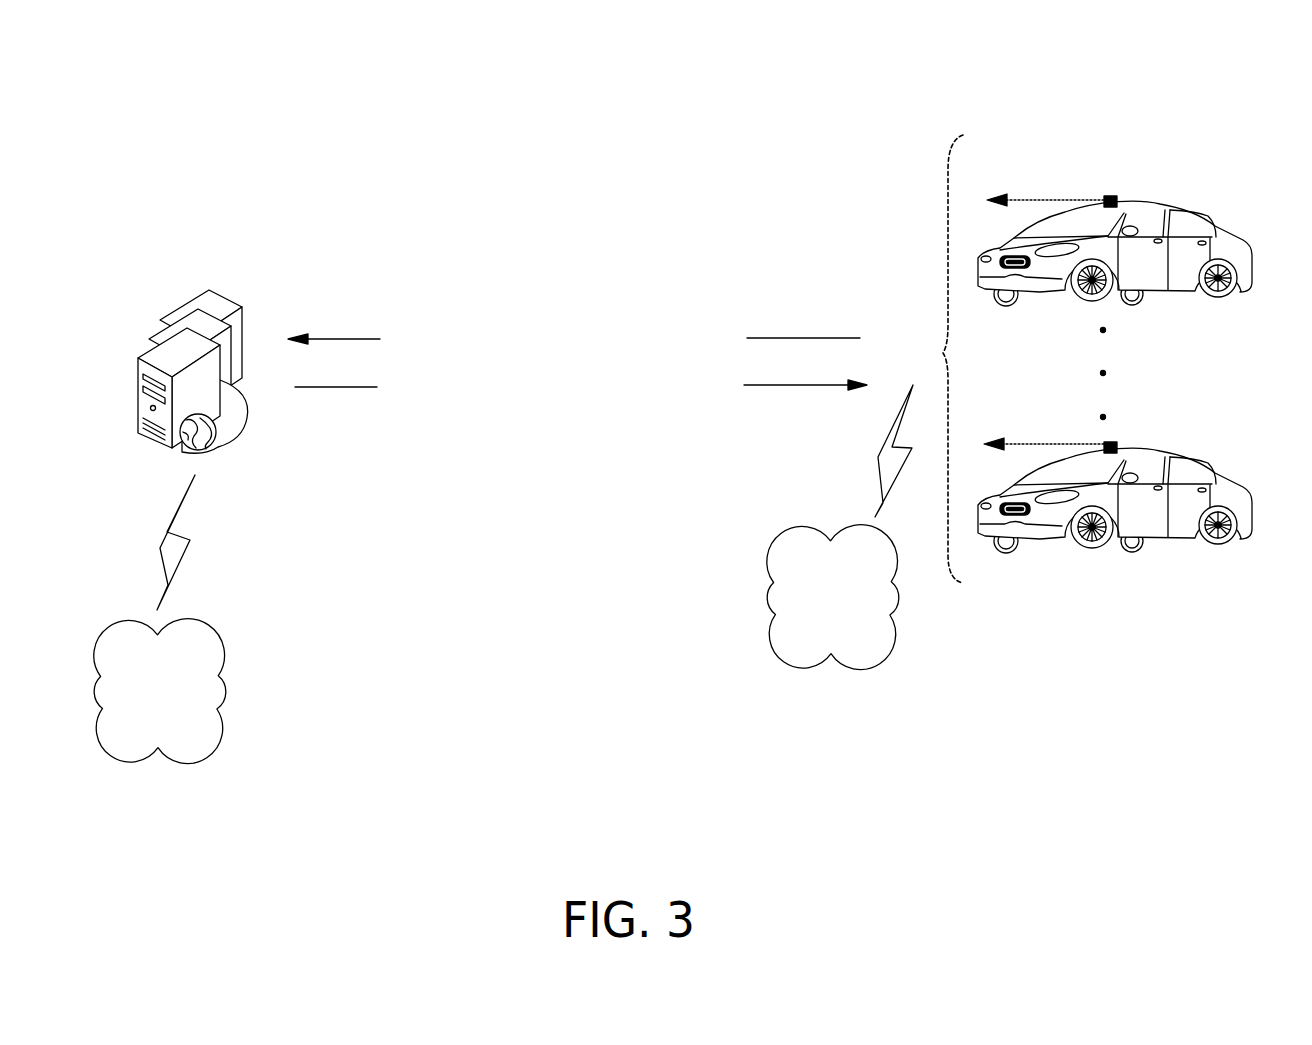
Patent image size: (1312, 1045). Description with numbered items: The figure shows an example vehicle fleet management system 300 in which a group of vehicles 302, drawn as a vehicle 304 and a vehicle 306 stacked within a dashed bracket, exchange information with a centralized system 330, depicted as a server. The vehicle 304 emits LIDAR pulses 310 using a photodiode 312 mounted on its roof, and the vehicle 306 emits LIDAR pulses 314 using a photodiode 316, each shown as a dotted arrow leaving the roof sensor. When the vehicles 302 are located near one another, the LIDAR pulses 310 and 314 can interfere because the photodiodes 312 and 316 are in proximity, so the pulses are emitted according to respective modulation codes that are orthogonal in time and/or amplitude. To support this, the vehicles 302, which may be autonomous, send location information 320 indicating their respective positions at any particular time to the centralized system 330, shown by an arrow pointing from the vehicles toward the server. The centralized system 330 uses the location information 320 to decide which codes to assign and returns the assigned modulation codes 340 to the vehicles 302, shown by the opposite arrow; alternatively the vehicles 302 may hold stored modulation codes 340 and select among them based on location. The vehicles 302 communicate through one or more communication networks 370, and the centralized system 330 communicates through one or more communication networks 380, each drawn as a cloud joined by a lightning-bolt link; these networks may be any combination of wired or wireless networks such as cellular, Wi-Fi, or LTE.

The vehicle fleet management system 300 is at (1145, 47).
The vehicles 302 is at (937, 360).
The vehicle 304 is at (1221, 228).
The vehicle 306 is at (1221, 475).
The LIDAR pulses 310 is at (1038, 198).
The photodiode 312 is at (1117, 197).
The LIDAR pulses 314 is at (1028, 443).
The photodiode 316 is at (1117, 443).
The location information 320 is at (574, 336).
The centralized system 330 is at (227, 293).
The modulation codes 340 is at (581, 390).
The communication networks 370 is at (836, 597).
The communication networks 380 is at (160, 691).